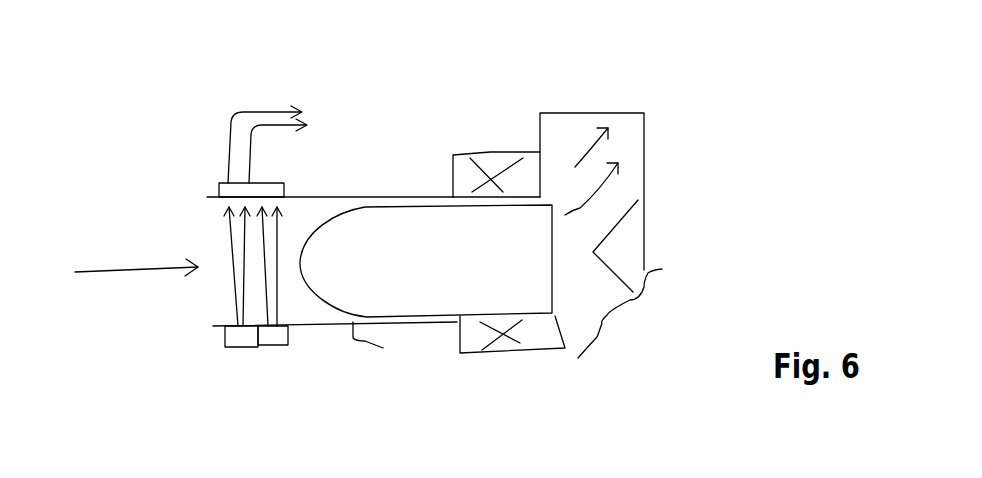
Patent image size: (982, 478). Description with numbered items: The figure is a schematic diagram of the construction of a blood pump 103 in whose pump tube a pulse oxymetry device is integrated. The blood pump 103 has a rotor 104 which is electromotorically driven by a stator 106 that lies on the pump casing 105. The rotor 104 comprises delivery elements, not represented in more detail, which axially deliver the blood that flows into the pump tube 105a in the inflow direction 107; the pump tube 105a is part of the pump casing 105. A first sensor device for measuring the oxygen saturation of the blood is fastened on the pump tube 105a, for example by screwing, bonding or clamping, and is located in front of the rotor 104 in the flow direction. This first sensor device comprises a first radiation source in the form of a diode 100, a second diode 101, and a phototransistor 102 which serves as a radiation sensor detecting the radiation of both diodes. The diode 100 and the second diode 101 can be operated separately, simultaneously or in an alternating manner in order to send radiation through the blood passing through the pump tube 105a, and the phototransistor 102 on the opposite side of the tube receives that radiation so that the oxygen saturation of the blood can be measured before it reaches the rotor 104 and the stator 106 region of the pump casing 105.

The diode 100 is at (235, 347).
The second diode 101 is at (278, 345).
The phototransistor 102 is at (275, 183).
The blood pump 103 is at (553, 92).
The rotor 104 is at (413, 207).
The pump casing 105 is at (447, 333).
The pump tube 105a is at (395, 345).
The stator 106 is at (500, 152).
The inflow direction 107 is at (155, 263).